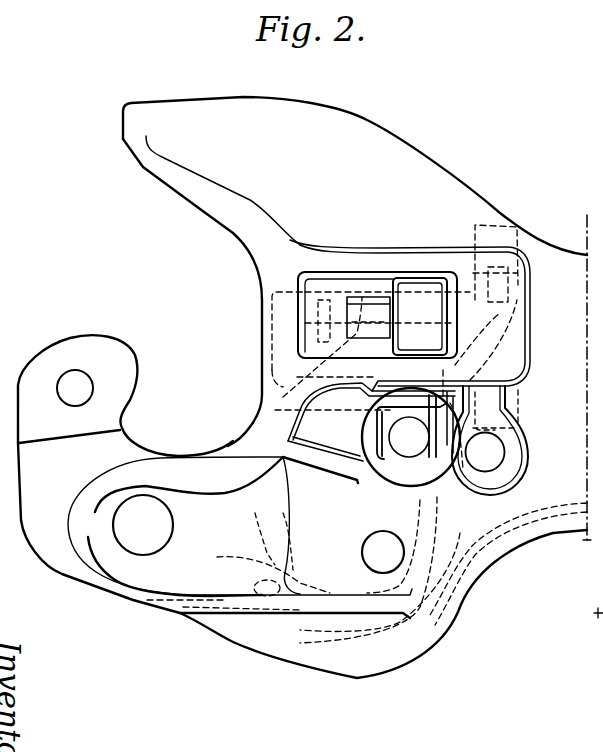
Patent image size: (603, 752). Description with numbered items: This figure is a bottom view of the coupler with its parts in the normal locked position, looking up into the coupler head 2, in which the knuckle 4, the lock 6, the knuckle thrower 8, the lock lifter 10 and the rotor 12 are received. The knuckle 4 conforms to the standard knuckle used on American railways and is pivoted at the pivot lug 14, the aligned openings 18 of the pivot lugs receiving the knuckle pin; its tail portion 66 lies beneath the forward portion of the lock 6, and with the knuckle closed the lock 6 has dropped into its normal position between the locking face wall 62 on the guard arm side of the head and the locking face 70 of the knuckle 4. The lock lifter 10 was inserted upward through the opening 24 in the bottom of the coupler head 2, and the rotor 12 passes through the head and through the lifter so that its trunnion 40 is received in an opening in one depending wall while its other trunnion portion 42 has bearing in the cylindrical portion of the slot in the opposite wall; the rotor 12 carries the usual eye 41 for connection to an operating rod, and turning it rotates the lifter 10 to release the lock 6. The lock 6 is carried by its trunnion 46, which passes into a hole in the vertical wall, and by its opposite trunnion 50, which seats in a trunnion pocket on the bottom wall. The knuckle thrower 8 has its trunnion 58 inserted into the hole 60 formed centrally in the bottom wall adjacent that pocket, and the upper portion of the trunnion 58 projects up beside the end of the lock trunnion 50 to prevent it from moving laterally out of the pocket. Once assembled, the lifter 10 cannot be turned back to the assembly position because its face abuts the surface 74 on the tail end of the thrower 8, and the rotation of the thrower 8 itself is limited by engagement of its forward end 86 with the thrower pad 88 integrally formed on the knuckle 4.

The coupler head 2 is at (545, 238).
The knuckle 4 is at (32, 453).
The lock 6 is at (270, 363).
The knuckle thrower 8 is at (482, 522).
The lock lifter 10 is at (387, 263).
The rotor 12 is at (397, 470).
The upper pivot lug 14 is at (602, 135).
The aligned openings 18 is at (172, 514).
The opening 24 is at (315, 343).
The trunnion 40 is at (443, 265).
The eye 41 is at (390, 430).
The trunnion portion 42 is at (478, 356).
The trunnion 46 is at (508, 228).
The trunnion 50 is at (518, 400).
The trunnion 58 is at (490, 463).
The hole 60 is at (495, 452).
The locking face wall 62 is at (337, 290).
The tail portion 66 is at (500, 495).
The locking face 70 is at (358, 408).
The surface 74 is at (391, 341).
The forward end 86 is at (263, 587).
The thrower pad 88 is at (266, 531).